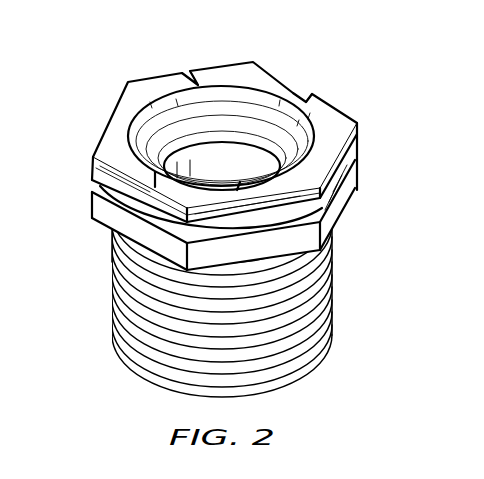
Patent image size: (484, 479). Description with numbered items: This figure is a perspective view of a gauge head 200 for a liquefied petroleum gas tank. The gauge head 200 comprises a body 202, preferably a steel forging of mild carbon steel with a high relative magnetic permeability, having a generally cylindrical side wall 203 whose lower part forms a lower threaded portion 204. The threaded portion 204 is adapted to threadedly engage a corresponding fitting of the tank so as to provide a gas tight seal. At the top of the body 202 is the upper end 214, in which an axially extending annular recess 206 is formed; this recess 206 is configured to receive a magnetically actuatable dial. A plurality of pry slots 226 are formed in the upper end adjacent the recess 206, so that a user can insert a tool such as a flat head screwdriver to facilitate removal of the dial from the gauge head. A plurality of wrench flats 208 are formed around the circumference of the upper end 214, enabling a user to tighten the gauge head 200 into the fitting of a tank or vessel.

The gauge head 200 is at (308, 59).
The body 202 is at (348, 255).
The generally cylindrical side wall 203 is at (110, 236).
The lower threaded portion 204 is at (110, 285).
The annular recess 206 is at (233, 92).
The wrench flats 208 is at (342, 193).
The upper end 214 is at (356, 129).
The pry slots 226 is at (160, 85).